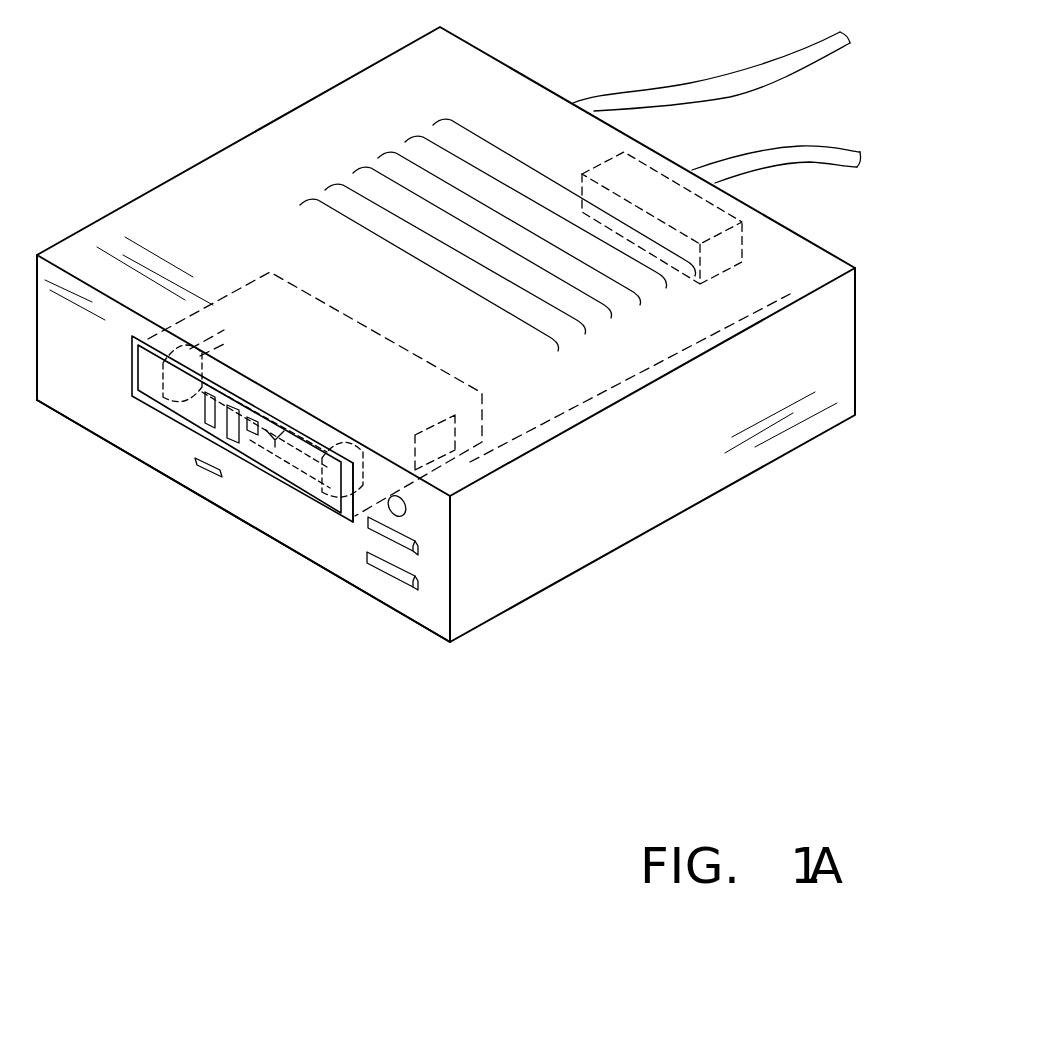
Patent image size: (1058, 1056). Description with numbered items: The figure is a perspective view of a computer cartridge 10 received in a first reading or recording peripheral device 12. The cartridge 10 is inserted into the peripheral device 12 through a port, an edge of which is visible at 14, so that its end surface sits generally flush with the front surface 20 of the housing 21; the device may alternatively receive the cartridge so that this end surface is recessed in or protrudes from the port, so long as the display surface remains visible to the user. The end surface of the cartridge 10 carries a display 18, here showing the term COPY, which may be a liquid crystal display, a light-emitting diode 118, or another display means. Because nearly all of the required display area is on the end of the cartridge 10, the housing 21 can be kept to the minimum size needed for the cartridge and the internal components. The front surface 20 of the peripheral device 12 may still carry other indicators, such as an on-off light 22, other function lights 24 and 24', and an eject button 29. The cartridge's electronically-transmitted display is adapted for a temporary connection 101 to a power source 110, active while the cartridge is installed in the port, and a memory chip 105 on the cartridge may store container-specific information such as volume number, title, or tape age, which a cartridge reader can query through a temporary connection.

The computer cartridge 10 is at (301, 520).
The first peripheral device 12 is at (221, 84).
The port edge 14 is at (130, 384).
The display 18 is at (180, 431).
The front surface 20 is at (87, 365).
The housing 21 is at (48, 378).
The on-off light 22 is at (404, 515).
The function light 24 is at (431, 562).
The function light 24' is at (380, 602).
The eject button 29 is at (205, 472).
The temporary connection 101 is at (348, 488).
The memory chip 105 is at (458, 434).
The power source 110 is at (590, 167).
The light-emitting diode 118 is at (273, 448).